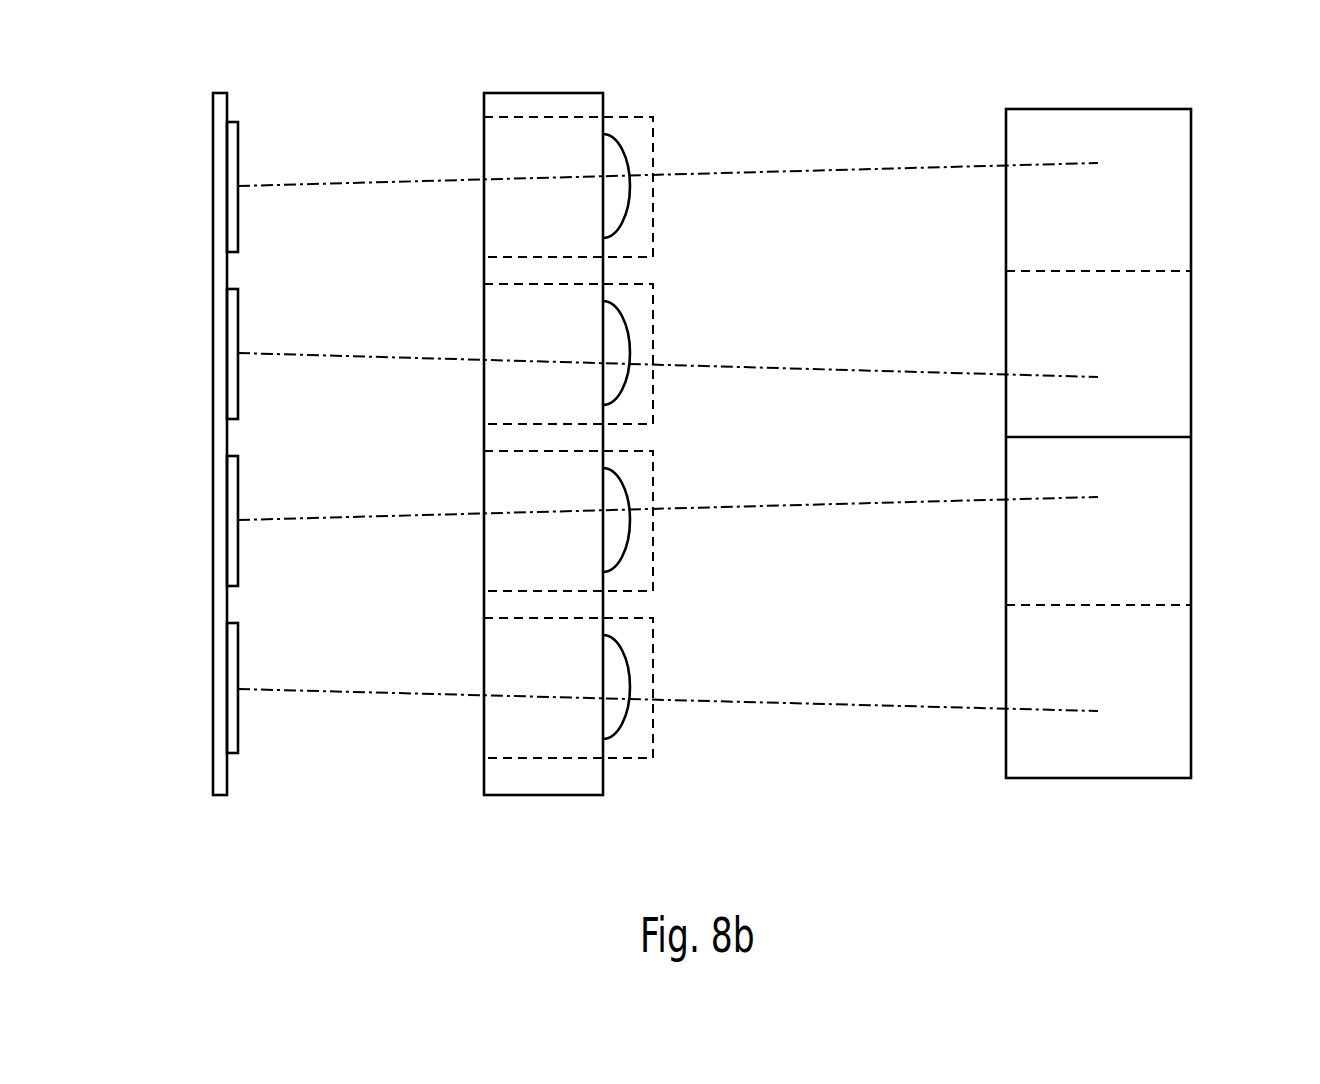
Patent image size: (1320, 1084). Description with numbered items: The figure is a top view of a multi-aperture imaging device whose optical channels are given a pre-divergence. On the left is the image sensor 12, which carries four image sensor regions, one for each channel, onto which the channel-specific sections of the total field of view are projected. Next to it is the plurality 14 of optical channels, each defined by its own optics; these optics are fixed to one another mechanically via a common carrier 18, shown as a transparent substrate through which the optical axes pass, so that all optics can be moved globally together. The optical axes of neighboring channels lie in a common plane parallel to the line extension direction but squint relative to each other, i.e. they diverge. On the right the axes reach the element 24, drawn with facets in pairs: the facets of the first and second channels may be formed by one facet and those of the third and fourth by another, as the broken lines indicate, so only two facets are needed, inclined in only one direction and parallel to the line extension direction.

The image sensor 12 is at (216, 86).
The plurality of optical channels 14 is at (532, 495).
The common carrier 18 is at (540, 798).
The detector / image sensor 24 is at (1145, 491).